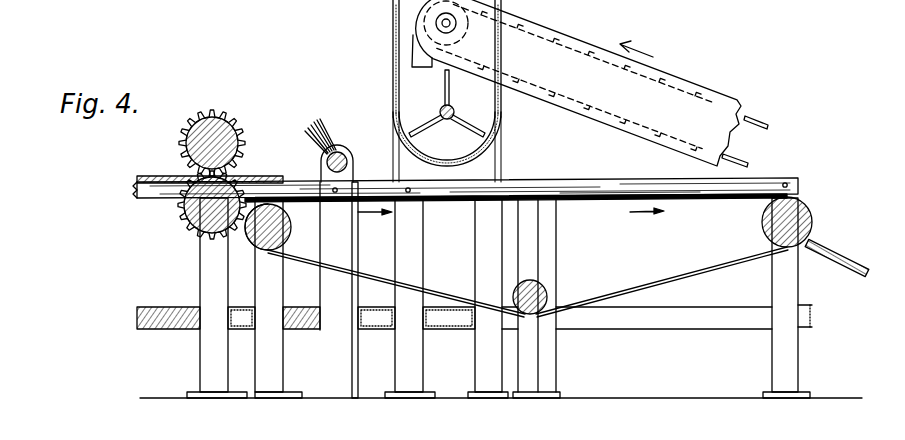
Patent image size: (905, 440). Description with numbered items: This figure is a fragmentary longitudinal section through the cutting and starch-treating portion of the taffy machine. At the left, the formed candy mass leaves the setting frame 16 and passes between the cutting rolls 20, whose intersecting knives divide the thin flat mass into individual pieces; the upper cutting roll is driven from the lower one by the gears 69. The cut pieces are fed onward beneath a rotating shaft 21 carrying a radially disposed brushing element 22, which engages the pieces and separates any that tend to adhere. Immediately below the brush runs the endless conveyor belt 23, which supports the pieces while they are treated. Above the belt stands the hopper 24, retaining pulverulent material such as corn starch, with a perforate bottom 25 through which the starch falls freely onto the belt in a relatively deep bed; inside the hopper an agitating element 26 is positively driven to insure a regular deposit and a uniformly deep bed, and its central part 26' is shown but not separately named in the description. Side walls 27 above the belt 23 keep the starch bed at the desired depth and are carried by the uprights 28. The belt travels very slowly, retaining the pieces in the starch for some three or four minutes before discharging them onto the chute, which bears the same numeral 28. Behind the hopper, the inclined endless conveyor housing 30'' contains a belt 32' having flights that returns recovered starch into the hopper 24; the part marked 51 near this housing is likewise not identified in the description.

The frame 16 is at (286, 232).
The cutting rolls 20 is at (228, 185).
The rotating shaft 21 is at (350, 158).
The brushing element 22 is at (316, 122).
The endless conveyor belt 23 is at (674, 272).
The hopper 24 is at (393, 40).
The perforate bottom 25 is at (498, 141).
The agitating element 26 is at (422, 103).
The rotor hub 26' is at (463, 102).
The side walls 27 is at (585, 178).
The uprights 28 is at (523, 248).
The endless conveyor housing 30'' is at (576, 83).
The belt having flights 32' is at (754, 123).
The conveyor chain 51 is at (569, 75).
The gears 69 is at (212, 123).